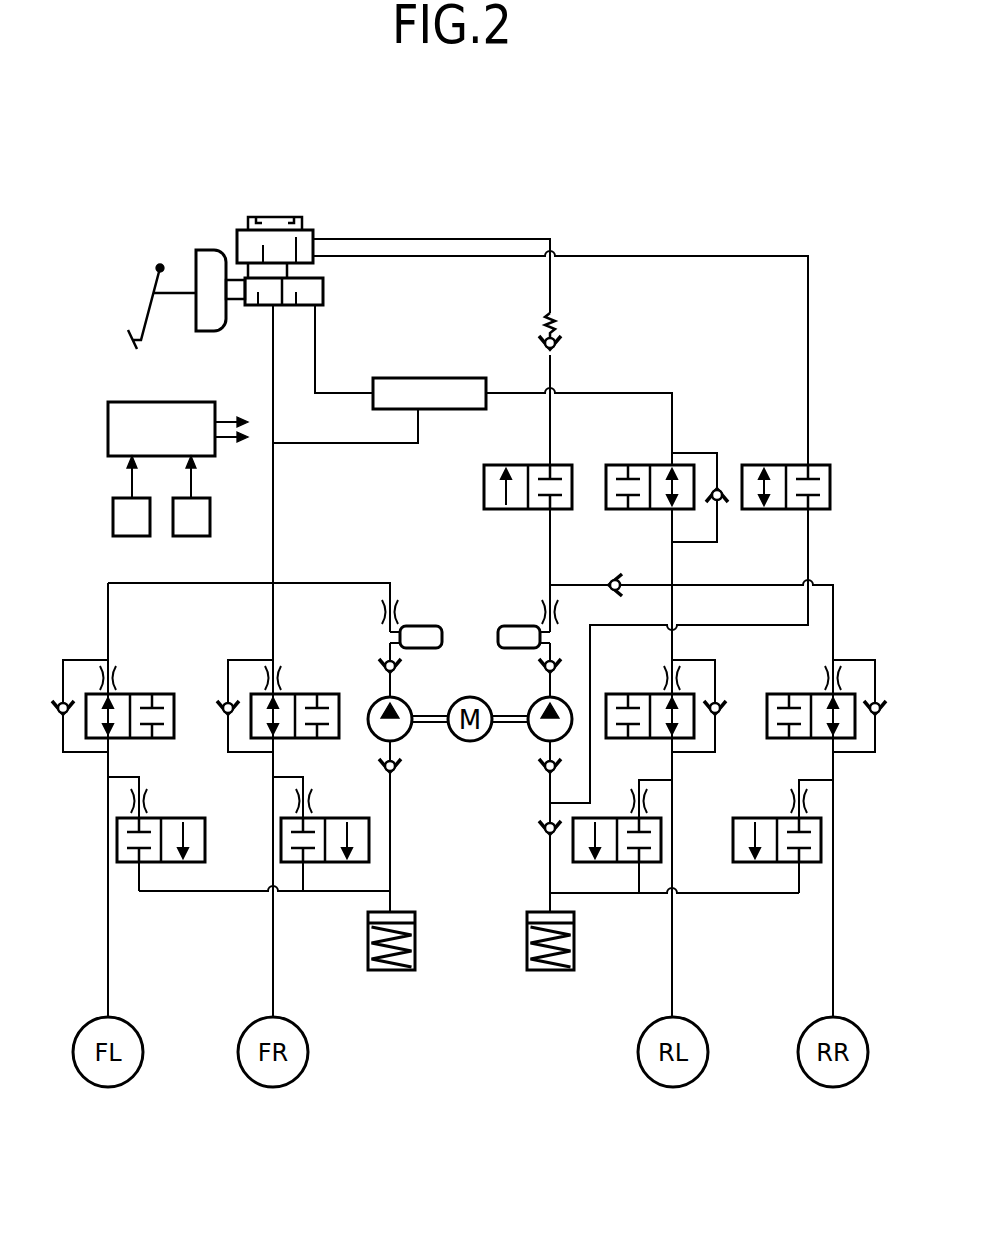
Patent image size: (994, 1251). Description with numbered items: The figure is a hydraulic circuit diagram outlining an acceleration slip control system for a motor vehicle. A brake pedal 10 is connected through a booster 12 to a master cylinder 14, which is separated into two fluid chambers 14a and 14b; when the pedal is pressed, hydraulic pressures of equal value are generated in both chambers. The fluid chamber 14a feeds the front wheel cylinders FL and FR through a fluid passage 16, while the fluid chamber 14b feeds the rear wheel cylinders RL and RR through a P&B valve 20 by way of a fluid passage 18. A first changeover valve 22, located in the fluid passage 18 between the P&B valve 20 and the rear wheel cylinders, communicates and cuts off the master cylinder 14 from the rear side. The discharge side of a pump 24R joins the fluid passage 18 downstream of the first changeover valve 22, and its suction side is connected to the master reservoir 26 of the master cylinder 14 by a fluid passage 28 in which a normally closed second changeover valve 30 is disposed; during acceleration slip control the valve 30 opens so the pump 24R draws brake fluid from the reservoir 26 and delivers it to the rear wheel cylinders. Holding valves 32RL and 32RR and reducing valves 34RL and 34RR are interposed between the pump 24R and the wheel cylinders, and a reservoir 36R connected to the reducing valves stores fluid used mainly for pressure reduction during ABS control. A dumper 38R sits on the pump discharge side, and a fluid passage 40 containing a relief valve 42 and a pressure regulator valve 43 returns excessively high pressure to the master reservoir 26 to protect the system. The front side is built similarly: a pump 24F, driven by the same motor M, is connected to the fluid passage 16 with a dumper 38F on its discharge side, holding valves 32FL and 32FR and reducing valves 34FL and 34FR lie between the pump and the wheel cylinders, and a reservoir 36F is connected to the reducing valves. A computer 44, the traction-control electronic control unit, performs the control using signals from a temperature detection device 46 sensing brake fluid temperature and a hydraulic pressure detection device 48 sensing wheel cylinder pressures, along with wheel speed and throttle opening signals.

The brake pedal 10 is at (130, 338).
The booster 12 is at (205, 250).
The master cylinder 14 is at (318, 330).
The fluid chamber 14a is at (256, 308).
The fluid chamber 14b is at (297, 294).
The fluid passage 16 is at (274, 487).
The fluid passage 18 is at (640, 393).
The P&B valve 20 is at (431, 378).
The first changeover valve 22 is at (616, 465).
The pump 24F is at (404, 737).
The pump 24R is at (536, 737).
The reservoir 26 is at (241, 220).
The fluid passage 28 is at (809, 325).
The second changeover valve 30 is at (767, 465).
The holding valve 32FL is at (145, 694).
The holding valve 32FR is at (308, 694).
The holding valve 32RL is at (618, 740).
The holding valve 32RR is at (785, 694).
The reducing valve 34FL is at (175, 817).
The reducing valve 34FR is at (340, 817).
The reducing valve 34RL is at (605, 865).
The reducing valve 34RR is at (750, 809).
The reservoir 36F is at (368, 957).
The reservoir 36R is at (527, 957).
The dumper 38F is at (426, 626).
The dumper 38R is at (514, 626).
The fluid passage 40 is at (497, 239).
The relief valve 42 is at (509, 465).
The pressure regulator valve 43 is at (559, 327).
The computer (TRCECU) 44 is at (108, 425).
The temperature detection device 46 is at (113, 530).
The hydraulic pressure detection device 48 is at (209, 530).